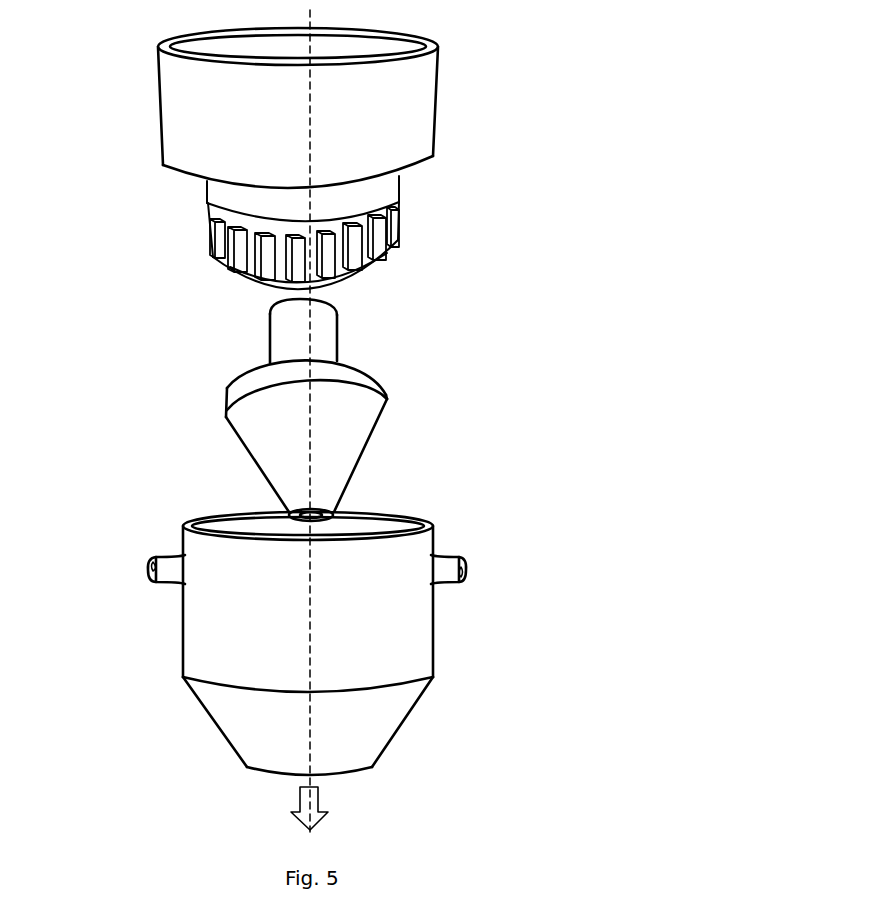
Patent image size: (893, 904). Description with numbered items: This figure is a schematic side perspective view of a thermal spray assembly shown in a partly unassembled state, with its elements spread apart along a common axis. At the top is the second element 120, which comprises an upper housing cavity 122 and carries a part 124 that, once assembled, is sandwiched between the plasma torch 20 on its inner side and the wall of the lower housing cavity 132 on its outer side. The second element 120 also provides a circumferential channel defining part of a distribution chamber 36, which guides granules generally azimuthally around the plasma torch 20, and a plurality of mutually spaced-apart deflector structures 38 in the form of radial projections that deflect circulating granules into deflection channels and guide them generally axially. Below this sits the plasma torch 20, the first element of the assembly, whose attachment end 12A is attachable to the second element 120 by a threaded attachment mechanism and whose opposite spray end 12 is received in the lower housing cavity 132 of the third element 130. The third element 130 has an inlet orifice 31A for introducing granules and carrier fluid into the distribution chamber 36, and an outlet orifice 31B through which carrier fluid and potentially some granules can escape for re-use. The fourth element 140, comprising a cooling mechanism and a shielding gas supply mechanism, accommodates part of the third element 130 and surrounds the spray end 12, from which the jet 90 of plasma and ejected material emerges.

The spray end 12 is at (309, 626).
The attachment end 12A is at (301, 172).
The plasma torch 20 is at (375, 413).
The distribution chamber 36 is at (217, 222).
The deflector structures 38 is at (230, 264).
The jet 90 is at (334, 808).
The second element 120 is at (438, 156).
The upper housing cavity 122 is at (368, 288).
The part of the second element 124 is at (334, 246).
The third element 130 is at (353, 584).
The lower housing cavity 132 is at (385, 504).
The fourth element 140 is at (372, 750).
The inlet orifice 31A is at (143, 570).
The outlet orifice 31B is at (478, 569).